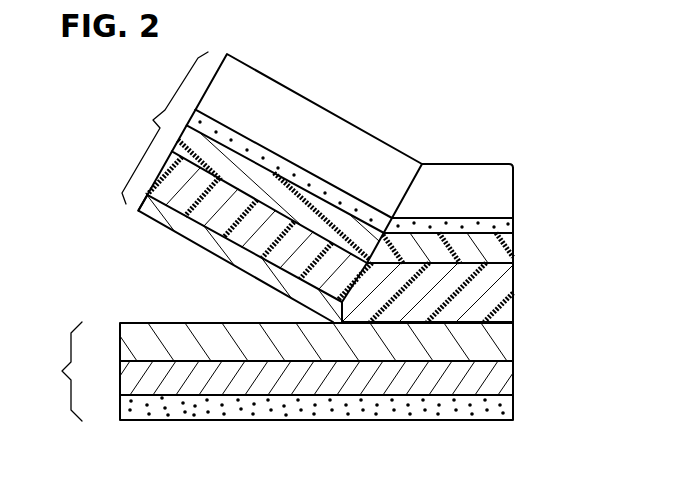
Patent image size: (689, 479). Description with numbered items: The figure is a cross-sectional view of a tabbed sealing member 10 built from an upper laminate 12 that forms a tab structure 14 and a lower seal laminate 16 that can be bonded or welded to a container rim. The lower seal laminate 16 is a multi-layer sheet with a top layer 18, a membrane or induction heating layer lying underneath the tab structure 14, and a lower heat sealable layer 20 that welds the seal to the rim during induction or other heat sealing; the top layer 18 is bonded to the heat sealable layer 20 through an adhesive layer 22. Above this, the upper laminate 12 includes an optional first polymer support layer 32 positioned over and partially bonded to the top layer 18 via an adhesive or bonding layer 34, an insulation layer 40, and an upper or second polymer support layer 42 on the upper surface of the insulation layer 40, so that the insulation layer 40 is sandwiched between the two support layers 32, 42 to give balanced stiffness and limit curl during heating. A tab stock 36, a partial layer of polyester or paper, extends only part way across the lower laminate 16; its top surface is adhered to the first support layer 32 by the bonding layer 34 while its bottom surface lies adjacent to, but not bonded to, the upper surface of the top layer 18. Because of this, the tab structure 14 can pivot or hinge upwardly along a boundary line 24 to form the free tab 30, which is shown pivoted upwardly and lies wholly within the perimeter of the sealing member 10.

The tabbed sealing member 10 is at (84, 187).
The upper laminate 12 is at (165, 128).
The tab structure 14 is at (357, 105).
The lower seal laminate 16 is at (59, 371).
The top layer 18 is at (505, 342).
The lower heat sealable layer 20 is at (498, 413).
The adhesive layer 22 is at (167, 323).
The boundary line 24 is at (422, 164).
The free tab 30 is at (176, 242).
The first polymer support layer 32 is at (498, 252).
The adhesive or bonding layer 34 is at (497, 300).
The tab stock 36 is at (146, 219).
The insulation layer 40 is at (514, 225).
The second polymer support layer 42 is at (493, 164).